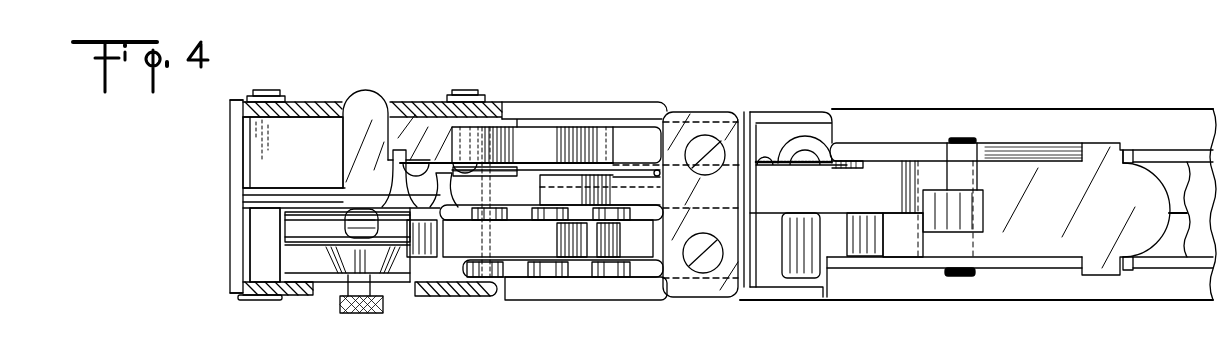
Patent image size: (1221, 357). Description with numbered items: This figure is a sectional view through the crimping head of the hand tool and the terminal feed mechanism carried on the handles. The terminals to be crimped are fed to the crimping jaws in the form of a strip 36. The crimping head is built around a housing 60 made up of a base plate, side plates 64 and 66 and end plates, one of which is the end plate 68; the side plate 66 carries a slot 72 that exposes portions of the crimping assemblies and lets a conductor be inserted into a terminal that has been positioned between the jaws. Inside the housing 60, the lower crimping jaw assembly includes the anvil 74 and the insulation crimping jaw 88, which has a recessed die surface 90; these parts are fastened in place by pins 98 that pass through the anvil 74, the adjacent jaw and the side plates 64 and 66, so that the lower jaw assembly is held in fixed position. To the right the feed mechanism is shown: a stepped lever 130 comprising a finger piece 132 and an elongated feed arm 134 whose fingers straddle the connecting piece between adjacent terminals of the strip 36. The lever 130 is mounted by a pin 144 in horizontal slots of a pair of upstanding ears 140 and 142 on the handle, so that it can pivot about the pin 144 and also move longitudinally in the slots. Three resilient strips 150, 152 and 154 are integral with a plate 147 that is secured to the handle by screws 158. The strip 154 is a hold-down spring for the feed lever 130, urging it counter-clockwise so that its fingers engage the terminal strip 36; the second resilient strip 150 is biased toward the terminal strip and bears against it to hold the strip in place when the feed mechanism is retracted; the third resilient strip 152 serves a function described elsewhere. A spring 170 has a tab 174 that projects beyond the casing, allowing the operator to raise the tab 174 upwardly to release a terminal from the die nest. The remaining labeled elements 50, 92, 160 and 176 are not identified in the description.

The strip 36 is at (509, 271).
The housing 50 is at (1205, 98).
The housing 60 is at (226, 152).
The side plate 64 is at (417, 106).
The side plate 66 is at (432, 287).
The end plate 68 is at (238, 190).
The slot 72 is at (297, 296).
The anvil 74 is at (252, 125).
The insulation crimping jaw 88 is at (283, 268).
The recessed die surface 90 is at (355, 270).
The bolt 92 is at (265, 255).
The pins 98 is at (262, 91).
The stepped lever 130 is at (1008, 175).
The finger piece 132 is at (1128, 177).
The elongated feed arm 134 is at (777, 177).
The upstanding ear 140 is at (937, 150).
The upstanding ear 142 is at (934, 262).
The pin 144 is at (966, 276).
The plate 147 is at (683, 145).
The second resilient strip 150 is at (517, 130).
The third resilient strip 152 is at (567, 240).
The resilient strip 154 is at (658, 170).
The screws 158 is at (697, 234).
The spring 160 is at (563, 183).
The spring 170 is at (341, 162).
The tab 174 is at (363, 90).
The pin 176 is at (352, 162).